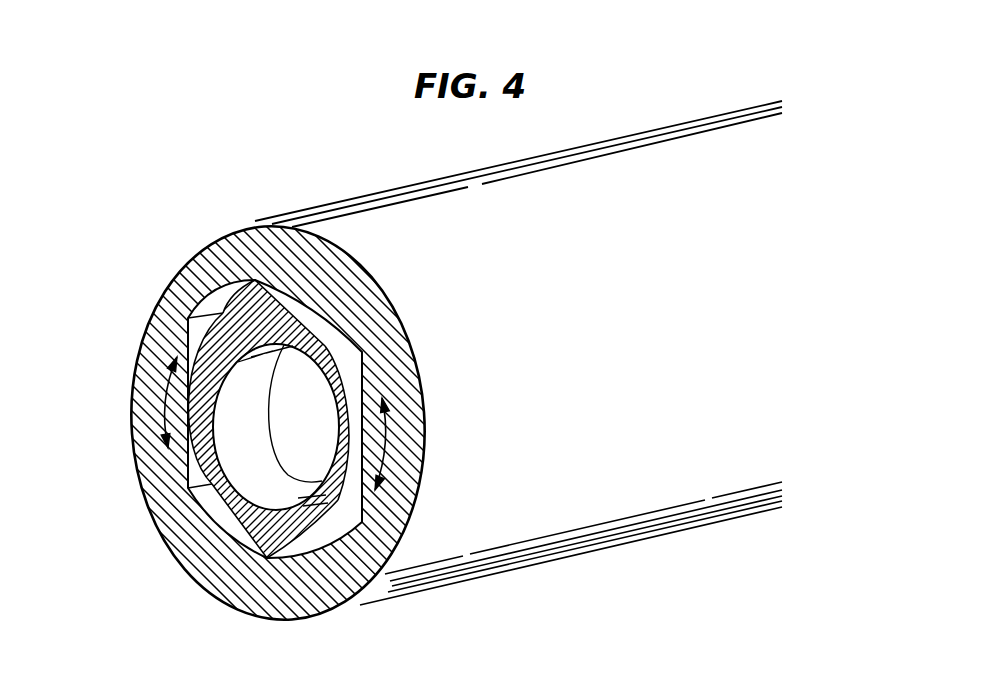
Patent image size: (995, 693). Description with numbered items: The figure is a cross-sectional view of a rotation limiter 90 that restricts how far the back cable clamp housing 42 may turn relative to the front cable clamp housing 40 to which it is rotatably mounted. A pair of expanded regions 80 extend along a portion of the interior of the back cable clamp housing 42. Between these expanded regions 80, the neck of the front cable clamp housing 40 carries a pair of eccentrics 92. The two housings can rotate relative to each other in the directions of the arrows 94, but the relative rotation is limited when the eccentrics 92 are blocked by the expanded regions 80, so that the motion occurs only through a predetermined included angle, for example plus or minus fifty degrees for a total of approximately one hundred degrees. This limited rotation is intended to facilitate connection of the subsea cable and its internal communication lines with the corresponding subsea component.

The front cable clamp housing 40 is at (337, 333).
The back cable clamp housing 42 is at (570, 513).
The expanded regions 80 is at (152, 314).
The rotation limiter 90 is at (165, 252).
The eccentrics 92 is at (268, 300).
The arrows 94 is at (163, 405).